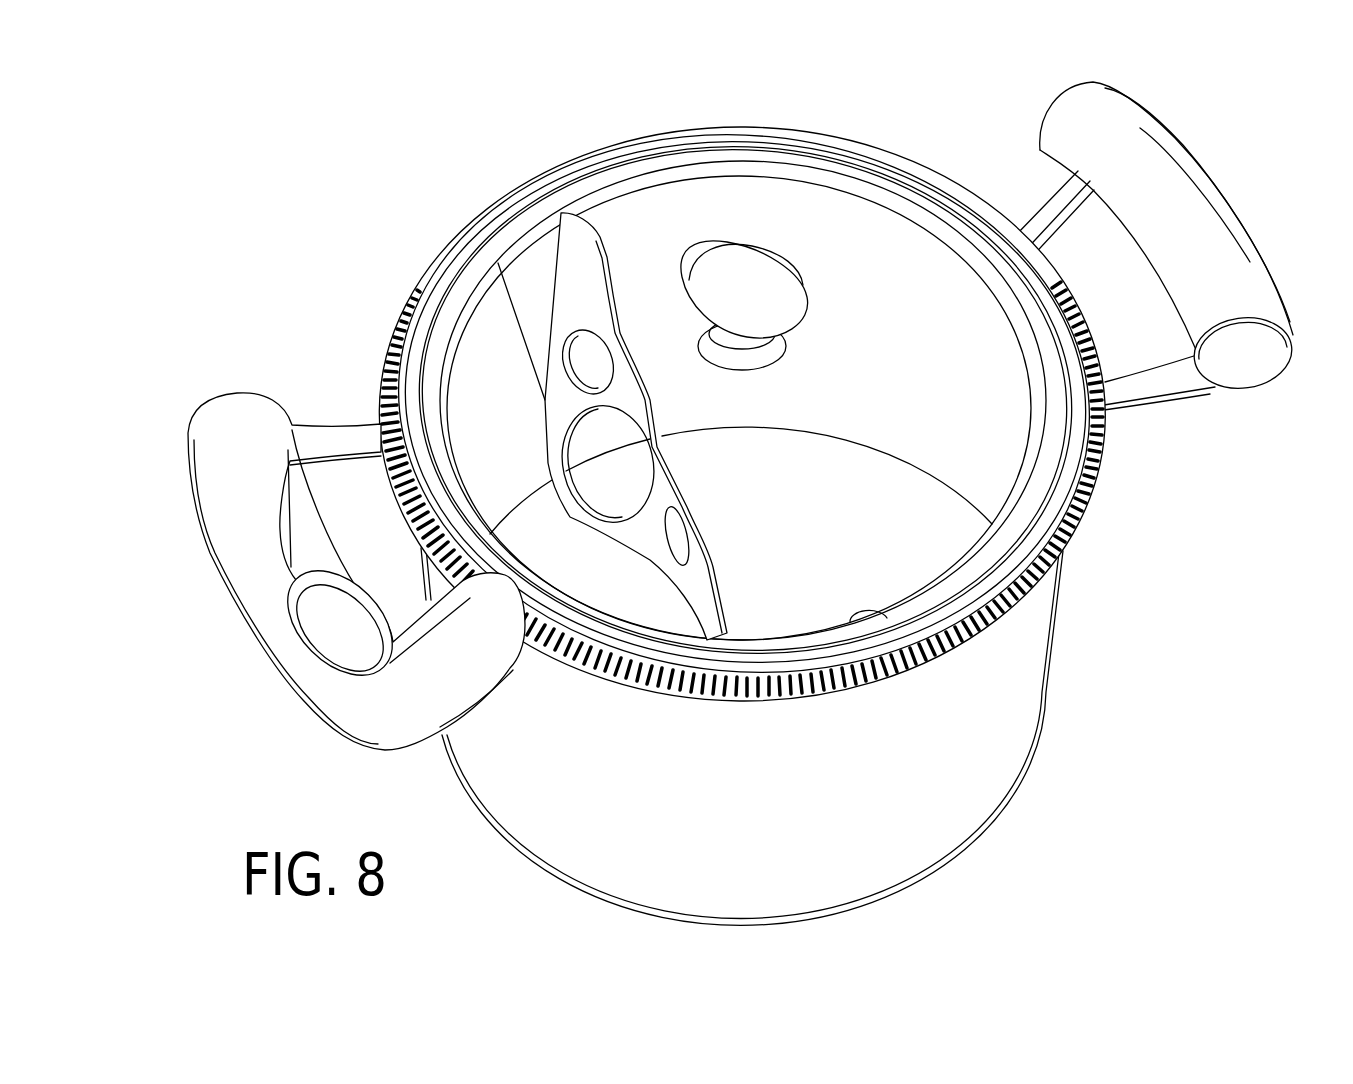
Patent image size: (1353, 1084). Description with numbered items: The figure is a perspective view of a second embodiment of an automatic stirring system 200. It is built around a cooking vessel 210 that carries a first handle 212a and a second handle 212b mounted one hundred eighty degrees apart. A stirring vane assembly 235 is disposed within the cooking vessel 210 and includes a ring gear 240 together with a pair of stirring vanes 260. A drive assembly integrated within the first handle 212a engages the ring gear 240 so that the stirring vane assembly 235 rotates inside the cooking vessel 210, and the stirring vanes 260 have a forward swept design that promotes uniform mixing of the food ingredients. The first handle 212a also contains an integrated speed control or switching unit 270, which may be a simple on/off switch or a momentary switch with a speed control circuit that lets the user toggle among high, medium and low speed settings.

The automatic stirring system 200 is at (373, 129).
The cooking vessel 210 is at (1023, 735).
The first handle 212a is at (205, 508).
The second handle 212b is at (1190, 171).
The stirring vane assembly 235 is at (579, 150).
The ring gear 240 is at (848, 132).
The stirring vanes 260 is at (597, 240).
The speed control or switching unit 270 is at (328, 634).